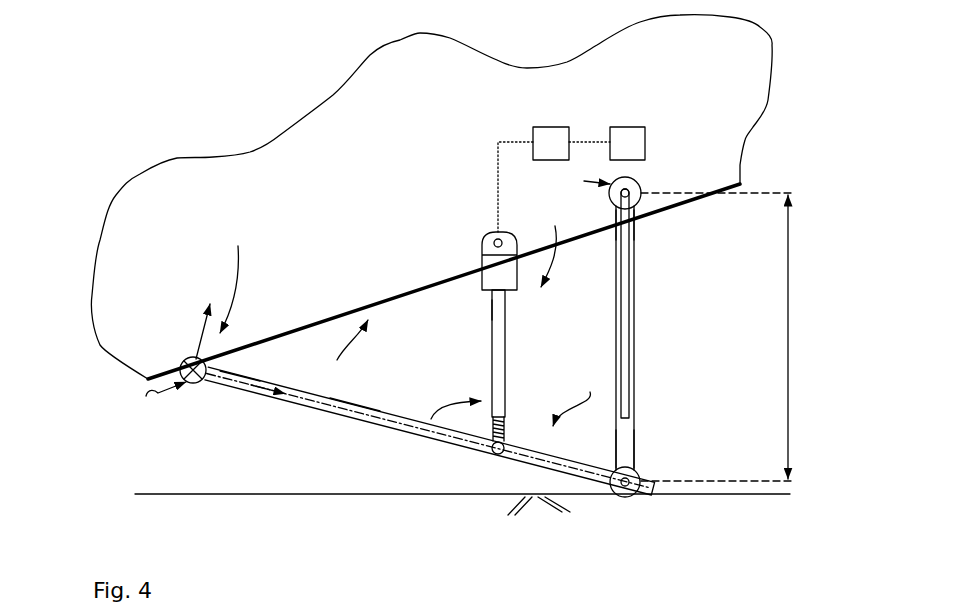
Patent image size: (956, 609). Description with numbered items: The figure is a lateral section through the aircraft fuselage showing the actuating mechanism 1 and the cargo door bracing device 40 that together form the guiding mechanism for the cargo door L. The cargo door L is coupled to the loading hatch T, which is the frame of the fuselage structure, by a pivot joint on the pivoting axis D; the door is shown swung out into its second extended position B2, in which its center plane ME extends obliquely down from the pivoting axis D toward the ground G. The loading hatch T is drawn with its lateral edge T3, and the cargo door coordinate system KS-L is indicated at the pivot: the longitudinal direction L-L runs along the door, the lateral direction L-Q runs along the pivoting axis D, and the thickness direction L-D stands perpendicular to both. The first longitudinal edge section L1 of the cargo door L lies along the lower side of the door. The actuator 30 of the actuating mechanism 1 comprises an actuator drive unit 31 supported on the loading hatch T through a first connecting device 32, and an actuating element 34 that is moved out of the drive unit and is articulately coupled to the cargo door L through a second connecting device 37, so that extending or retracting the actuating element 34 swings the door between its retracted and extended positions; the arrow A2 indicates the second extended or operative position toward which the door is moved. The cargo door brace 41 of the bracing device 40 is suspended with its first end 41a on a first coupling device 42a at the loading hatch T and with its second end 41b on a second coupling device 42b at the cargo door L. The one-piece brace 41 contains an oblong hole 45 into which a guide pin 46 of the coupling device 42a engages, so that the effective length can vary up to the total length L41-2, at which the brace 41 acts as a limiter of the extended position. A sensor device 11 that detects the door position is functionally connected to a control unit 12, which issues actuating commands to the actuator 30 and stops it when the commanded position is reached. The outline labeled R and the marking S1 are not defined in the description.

The vehicle body / frame outline R is at (208, 160).
The sensor device 11 is at (543, 132).
The control unit 12 is at (622, 132).
The first coupling device 42a is at (634, 189).
The second coupling device 42b is at (630, 487).
The guide pin 46 is at (579, 182).
The cargo door coordinate system KS-L is at (240, 277).
The lateral edge T3 is at (400, 291).
The loading hatch T is at (340, 351).
The first connecting device 32 is at (492, 242).
The actuating mechanism 1 is at (552, 244).
The first end of cargo door brace 41a is at (644, 221).
The second end of cargo door brace 41b is at (649, 468).
The cargo door bracing device 40 is at (678, 279).
The cargo door brace 41 is at (660, 294).
The oblong hole 45 is at (630, 376).
The actuator 30 is at (553, 346).
The actuator drive unit 31 is at (482, 284).
The actuating element 34 is at (505, 368).
The second connecting device 37 is at (496, 456).
The actuator stroke S1 is at (491, 306).
The second extended position A2 is at (576, 395).
The second extended position B2 is at (380, 398).
The cargo door L is at (319, 412).
The first longitudinal edge section L1 is at (354, 419).
The longitudinal direction L-L is at (233, 387).
The thickness direction L-D is at (178, 331).
The lateral direction L-Q is at (146, 401).
The pivoting axis D is at (190, 384).
The second length of cargo door brace L41-2 is at (788, 412).
The ground G is at (210, 495).
The center plane ME is at (582, 479).